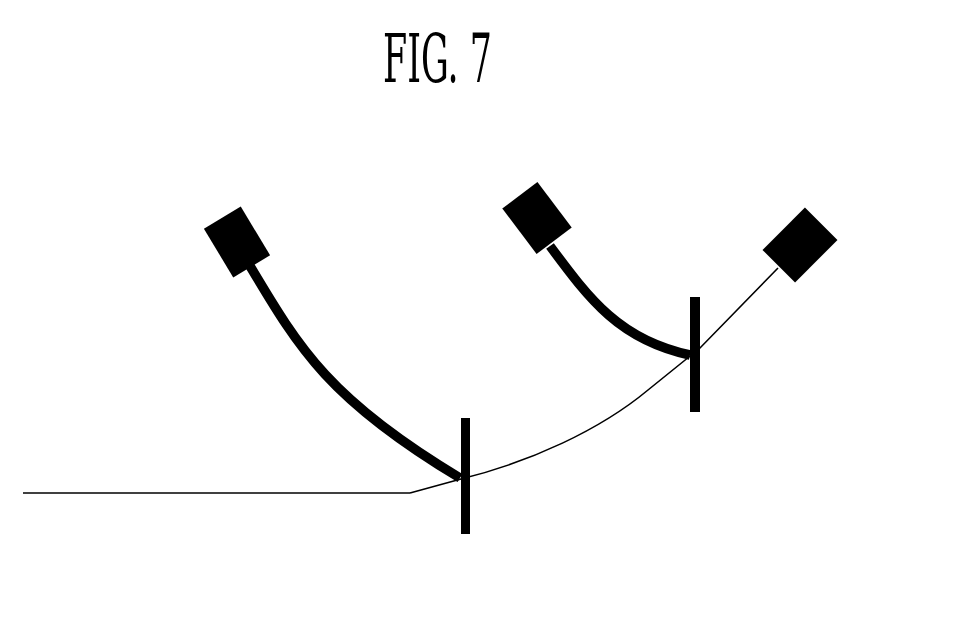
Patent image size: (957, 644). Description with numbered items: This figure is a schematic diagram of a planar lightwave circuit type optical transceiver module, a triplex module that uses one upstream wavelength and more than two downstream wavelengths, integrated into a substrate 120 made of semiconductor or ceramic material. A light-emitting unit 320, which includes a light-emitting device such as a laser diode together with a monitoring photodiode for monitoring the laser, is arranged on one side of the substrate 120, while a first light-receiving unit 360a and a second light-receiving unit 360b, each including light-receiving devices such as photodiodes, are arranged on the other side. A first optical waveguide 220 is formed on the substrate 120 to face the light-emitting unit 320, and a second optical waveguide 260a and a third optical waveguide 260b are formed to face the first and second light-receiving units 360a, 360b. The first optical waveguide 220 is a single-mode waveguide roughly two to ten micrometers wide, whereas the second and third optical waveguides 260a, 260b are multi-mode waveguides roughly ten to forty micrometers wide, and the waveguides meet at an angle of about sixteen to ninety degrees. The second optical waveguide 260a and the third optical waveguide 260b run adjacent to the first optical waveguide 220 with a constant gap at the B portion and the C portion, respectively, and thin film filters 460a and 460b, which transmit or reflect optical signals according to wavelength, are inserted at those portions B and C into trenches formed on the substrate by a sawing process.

The substrate 120 is at (143, 393).
The first optical waveguide 220 is at (187, 493).
The second optical waveguide 260a is at (595, 285).
The third optical waveguide 260b is at (298, 340).
The light-emitting unit 320 is at (820, 255).
The first light-receiving unit 360a is at (555, 203).
The second light-receiving unit 360b is at (255, 230).
The thin film filter 460a is at (700, 385).
The thin film filter 460b is at (470, 508).
The B portion B is at (672, 410).
The C portion C is at (443, 503).